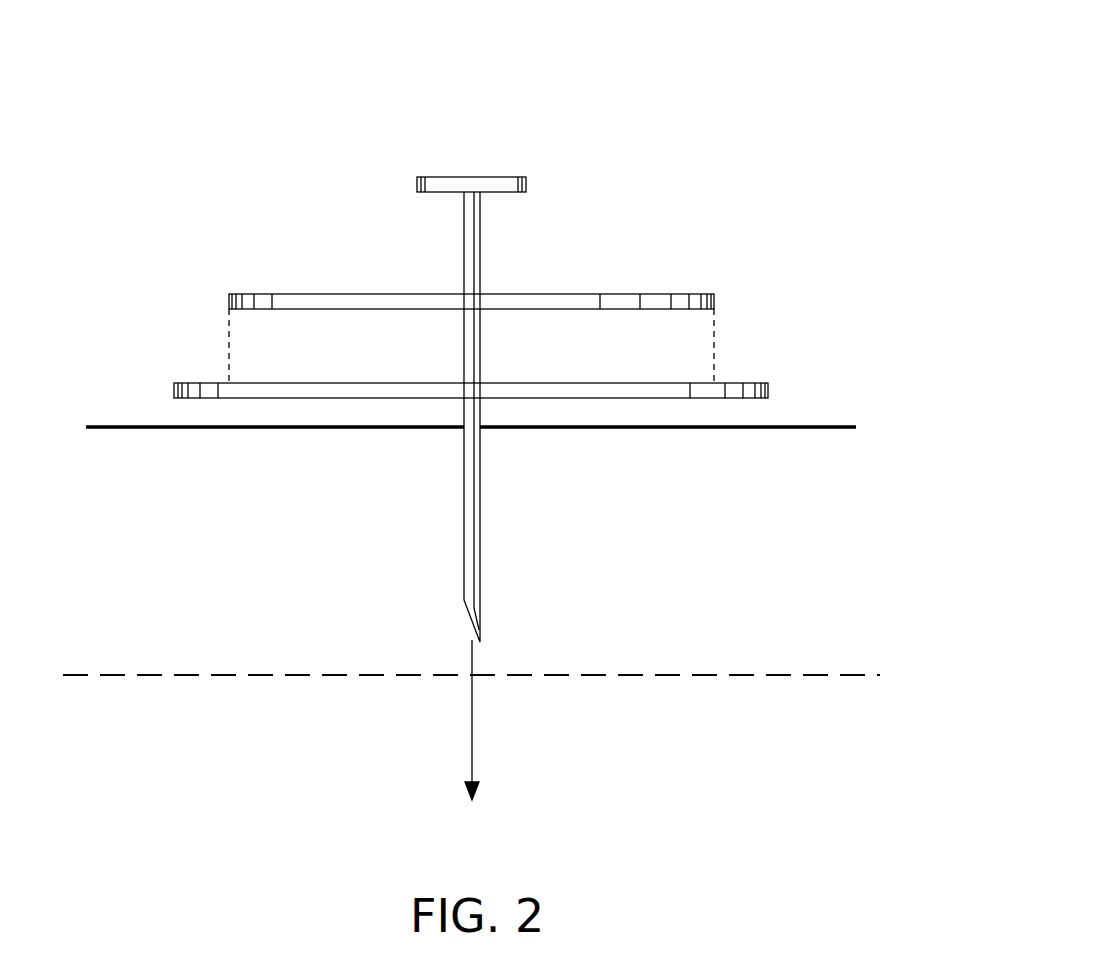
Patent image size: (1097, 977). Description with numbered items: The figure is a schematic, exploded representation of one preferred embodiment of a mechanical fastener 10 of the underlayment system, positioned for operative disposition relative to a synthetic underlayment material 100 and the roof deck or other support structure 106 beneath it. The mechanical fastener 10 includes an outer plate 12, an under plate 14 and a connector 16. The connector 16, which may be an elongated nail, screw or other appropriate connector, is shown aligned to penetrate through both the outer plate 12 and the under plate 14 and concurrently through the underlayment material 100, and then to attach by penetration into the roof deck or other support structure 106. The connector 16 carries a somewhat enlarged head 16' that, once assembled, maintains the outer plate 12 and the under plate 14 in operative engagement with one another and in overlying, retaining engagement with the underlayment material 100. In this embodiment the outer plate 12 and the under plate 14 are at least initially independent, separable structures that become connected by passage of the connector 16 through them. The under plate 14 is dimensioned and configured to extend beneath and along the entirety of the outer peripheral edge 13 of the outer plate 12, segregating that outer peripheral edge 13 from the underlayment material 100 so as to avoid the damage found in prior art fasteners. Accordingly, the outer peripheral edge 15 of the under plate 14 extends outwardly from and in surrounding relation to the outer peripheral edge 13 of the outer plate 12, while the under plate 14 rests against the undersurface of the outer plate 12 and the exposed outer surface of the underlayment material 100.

The mechanical fastener 10 is at (716, 249).
The outer plate 12 is at (265, 293).
The outer peripheral edge 13 is at (716, 302).
The under plate 14 is at (195, 382).
The outer peripheral edge 15 is at (770, 390).
The connector 16 is at (381, 415).
The enlarged head 16' is at (520, 104).
The underlayment material 100 is at (798, 426).
The support structure 106 is at (767, 675).